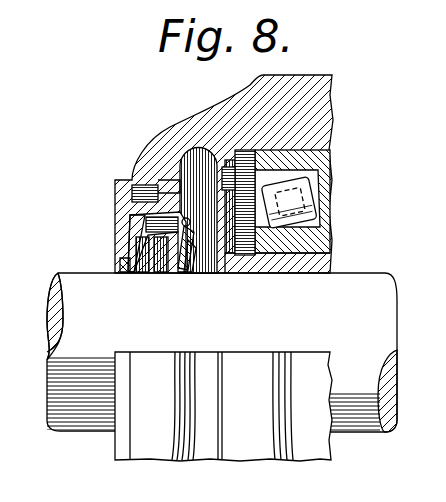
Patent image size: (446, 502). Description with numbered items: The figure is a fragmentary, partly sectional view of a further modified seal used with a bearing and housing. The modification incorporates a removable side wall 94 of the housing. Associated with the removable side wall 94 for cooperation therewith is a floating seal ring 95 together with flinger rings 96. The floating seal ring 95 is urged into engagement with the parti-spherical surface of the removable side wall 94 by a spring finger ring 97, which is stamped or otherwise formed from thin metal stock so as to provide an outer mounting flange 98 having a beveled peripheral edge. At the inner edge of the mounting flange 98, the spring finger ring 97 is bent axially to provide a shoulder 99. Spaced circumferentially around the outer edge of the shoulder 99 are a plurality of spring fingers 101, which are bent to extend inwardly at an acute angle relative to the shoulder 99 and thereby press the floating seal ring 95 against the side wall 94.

The removable side wall 94 is at (124, 200).
The floating seal ring 95 is at (114, 265).
The flinger rings 96 is at (141, 274).
The spring finger ring 97 is at (189, 219).
The outer mounting flange 98 is at (118, 226).
The shoulder 99 is at (190, 229).
The spring fingers 101 is at (186, 268).